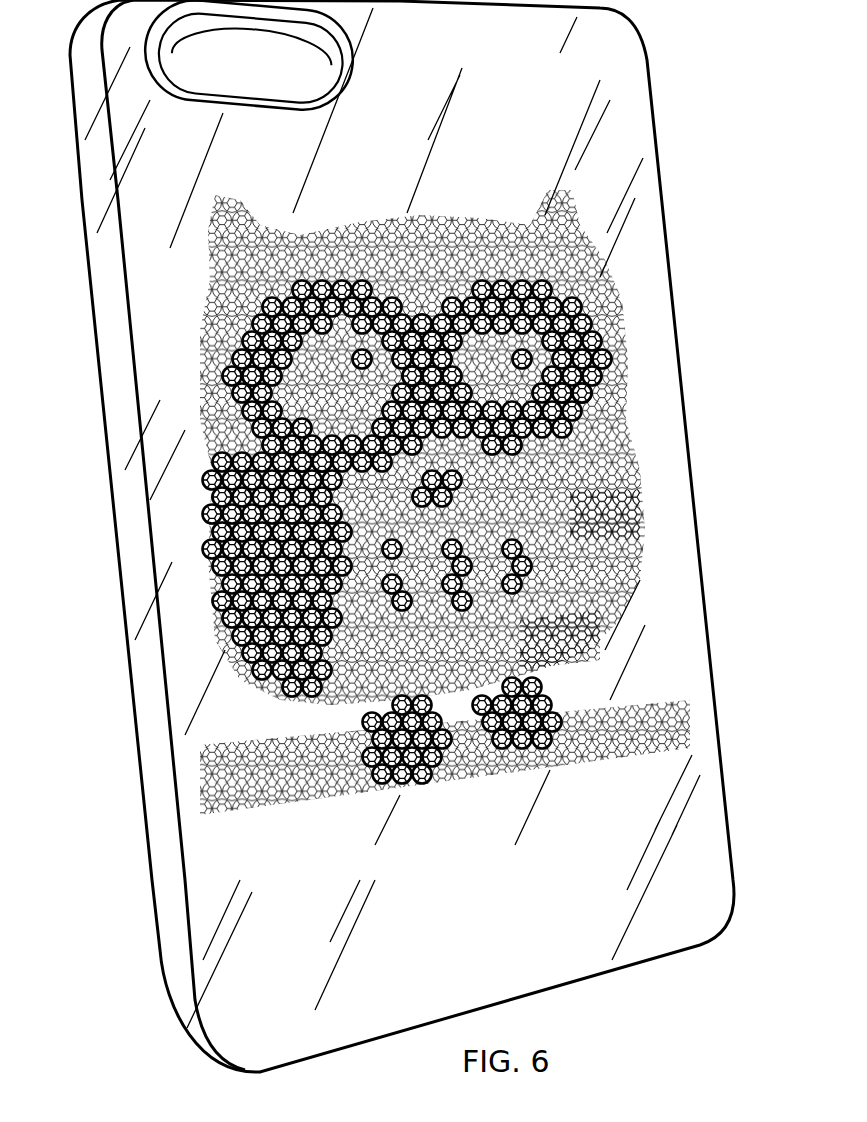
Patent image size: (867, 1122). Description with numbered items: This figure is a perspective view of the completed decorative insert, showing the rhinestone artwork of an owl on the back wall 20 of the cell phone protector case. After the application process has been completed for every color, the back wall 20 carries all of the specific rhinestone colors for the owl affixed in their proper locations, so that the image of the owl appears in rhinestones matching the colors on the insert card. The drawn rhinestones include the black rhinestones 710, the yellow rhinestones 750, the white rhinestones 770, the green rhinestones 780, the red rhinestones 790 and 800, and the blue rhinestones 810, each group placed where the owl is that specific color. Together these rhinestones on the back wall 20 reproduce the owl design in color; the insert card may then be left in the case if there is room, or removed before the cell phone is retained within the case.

The back wall 20 is at (415, 96).
The rhinestones 710 is at (228, 375).
The rhinestones 750 is at (458, 488).
The rhinestones 770 is at (225, 307).
The rhinestones 780 is at (215, 565).
The rhinestones 790 is at (362, 236).
The rhinestones 800 is at (465, 238).
The rhinestones 810 is at (548, 652).